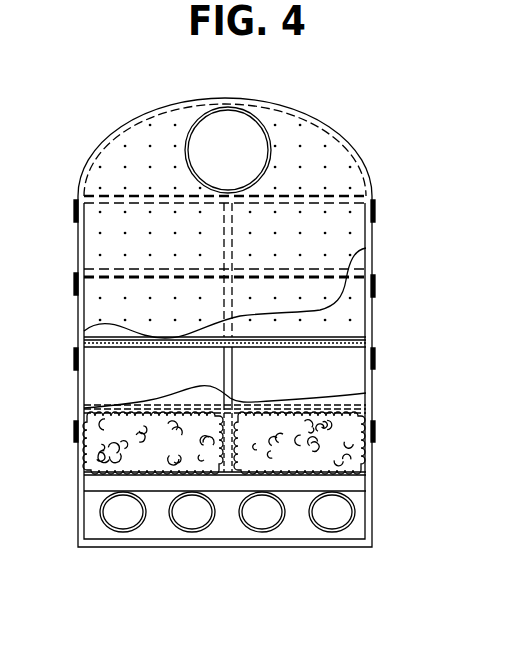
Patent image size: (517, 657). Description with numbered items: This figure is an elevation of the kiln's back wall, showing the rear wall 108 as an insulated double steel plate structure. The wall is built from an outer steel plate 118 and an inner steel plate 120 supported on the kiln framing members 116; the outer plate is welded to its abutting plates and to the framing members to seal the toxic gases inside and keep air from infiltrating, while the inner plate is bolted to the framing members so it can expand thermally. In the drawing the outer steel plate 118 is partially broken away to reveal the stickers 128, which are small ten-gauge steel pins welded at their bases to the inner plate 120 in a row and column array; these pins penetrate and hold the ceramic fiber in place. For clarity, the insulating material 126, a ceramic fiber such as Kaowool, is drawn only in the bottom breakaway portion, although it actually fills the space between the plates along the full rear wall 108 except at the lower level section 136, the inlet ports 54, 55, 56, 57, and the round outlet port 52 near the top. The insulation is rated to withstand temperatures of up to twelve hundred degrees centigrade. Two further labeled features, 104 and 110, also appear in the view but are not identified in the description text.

The treatment vessel 104 is at (305, 97).
The dome top 110 is at (176, 100).
The rear wall 108 is at (137, 160).
The stickers 128 is at (178, 235).
The outlet port 52 is at (214, 159).
The inner steel plate 120 is at (343, 232).
The kiln framing members 116 is at (76, 352).
The outer steel plate 118 is at (317, 332).
The insulating material 126 is at (132, 438).
The lower level section 136 is at (90, 518).
The inlet port 54 is at (122, 521).
The inlet port 55 is at (195, 523).
The inlet port 56 is at (265, 522).
The inlet port 57 is at (333, 521).